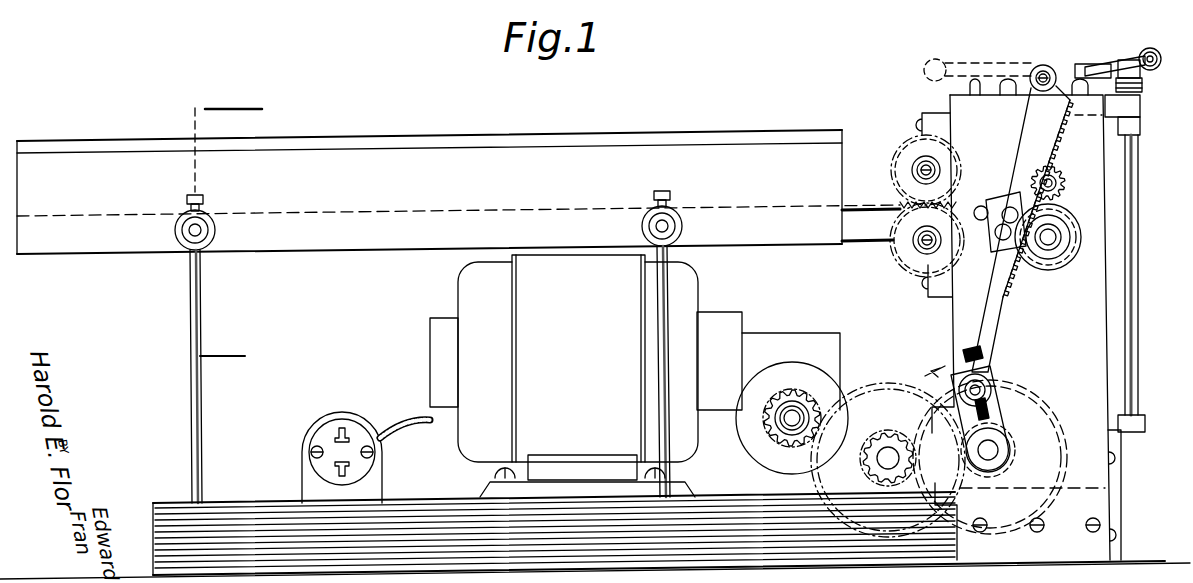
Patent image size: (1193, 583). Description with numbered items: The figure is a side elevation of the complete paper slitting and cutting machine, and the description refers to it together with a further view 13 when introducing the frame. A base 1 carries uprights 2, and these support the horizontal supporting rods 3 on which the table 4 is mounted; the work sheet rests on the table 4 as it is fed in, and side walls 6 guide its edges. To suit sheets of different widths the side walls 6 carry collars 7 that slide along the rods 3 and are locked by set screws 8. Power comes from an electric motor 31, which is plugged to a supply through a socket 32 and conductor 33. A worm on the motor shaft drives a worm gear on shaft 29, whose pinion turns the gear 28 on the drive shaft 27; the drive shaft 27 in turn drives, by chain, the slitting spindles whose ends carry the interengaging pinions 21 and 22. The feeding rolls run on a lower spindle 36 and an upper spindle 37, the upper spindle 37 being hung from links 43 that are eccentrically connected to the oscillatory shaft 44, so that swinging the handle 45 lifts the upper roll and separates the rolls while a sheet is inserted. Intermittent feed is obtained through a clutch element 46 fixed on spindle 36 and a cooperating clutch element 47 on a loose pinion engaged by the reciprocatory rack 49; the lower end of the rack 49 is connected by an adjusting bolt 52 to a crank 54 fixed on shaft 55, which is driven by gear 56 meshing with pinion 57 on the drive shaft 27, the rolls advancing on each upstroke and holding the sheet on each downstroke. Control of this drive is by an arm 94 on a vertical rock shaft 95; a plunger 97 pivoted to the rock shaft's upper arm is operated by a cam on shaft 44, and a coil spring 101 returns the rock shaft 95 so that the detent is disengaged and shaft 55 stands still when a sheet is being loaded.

The base 1 is at (236, 502).
The uprights 2 is at (205, 404).
The horizontal supporting rods 3 is at (201, 230).
The table 4 is at (856, 204).
The side walls 6 is at (722, 148).
The collars 7 is at (208, 222).
The set screws 8 is at (203, 200).
The axis line 13 is at (178, 92).
The pinion 21 is at (950, 176).
The pinion 22 is at (946, 220).
The drive shaft 27 is at (888, 462).
The gear 28 is at (887, 392).
The shaft 29 is at (790, 420).
The electric motor 31 is at (700, 286).
The socket 32 is at (330, 422).
The conductor 33 is at (410, 426).
The spindle 36 is at (1050, 240).
The spindle 37 is at (1057, 186).
The links 43 is at (1028, 120).
The oscillatory shaft 44 is at (1046, 66).
The handle 45 is at (1128, 58).
The clutch element 46 is at (1060, 250).
The clutch element 47 is at (1068, 224).
The reciprocatory rack 49 is at (1002, 292).
The adjusting bolt 52 is at (990, 408).
The crank 54 is at (1003, 440).
The shaft 55 is at (992, 450).
The gear 56 is at (1055, 410).
The pinion 57 is at (880, 440).
The arm 94 is at (1118, 423).
The vertical rock shaft 95 is at (1140, 190).
The plunger 97 is at (1094, 70).
The coil spring 101 is at (1142, 86).